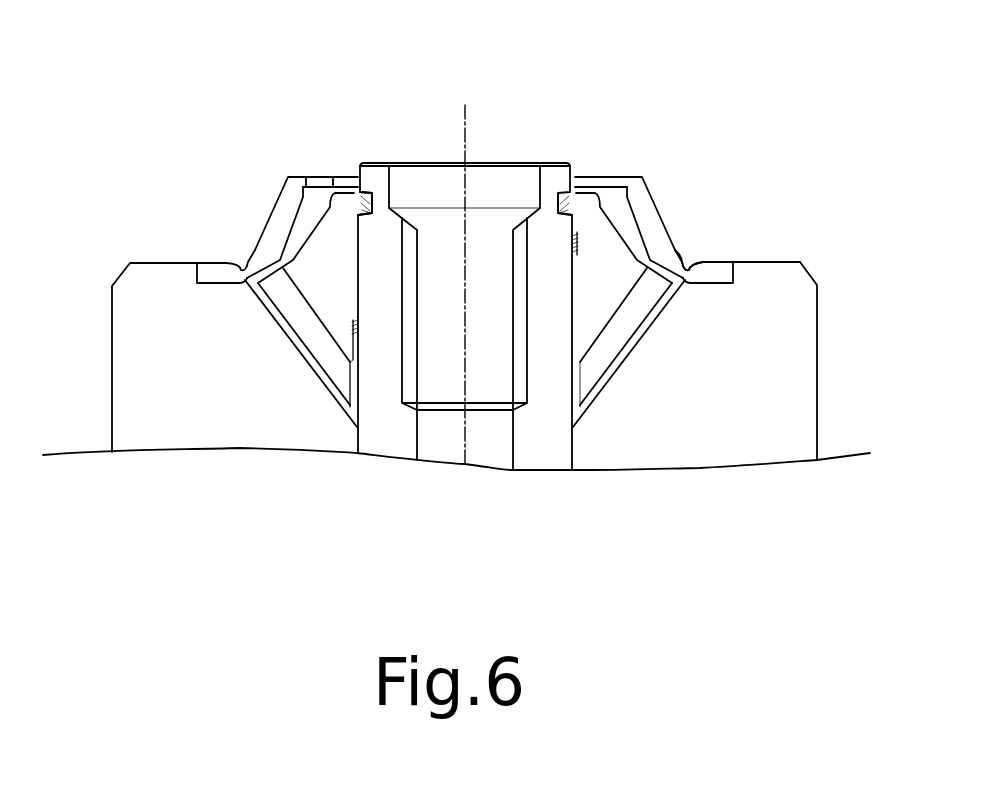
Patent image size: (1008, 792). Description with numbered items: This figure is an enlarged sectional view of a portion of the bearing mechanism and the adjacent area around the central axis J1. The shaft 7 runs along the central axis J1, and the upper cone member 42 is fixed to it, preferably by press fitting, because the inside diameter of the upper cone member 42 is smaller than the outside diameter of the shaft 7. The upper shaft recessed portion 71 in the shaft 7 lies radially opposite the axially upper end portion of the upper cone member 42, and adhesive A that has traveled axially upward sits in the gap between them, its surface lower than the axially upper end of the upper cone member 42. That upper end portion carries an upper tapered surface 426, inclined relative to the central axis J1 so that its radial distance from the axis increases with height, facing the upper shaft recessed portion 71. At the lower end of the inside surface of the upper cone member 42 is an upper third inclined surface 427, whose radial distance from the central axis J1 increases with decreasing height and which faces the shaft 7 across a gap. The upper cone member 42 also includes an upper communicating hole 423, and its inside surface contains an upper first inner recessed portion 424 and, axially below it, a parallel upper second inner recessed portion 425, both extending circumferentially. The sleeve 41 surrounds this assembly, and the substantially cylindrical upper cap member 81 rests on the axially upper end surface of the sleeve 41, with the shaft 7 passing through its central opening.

The sleeve 41 is at (737, 368).
The upper cone member 42 is at (603, 243).
The upper communicating hole 423 is at (680, 258).
The upper first inner recessed portion 424 is at (577, 240).
The upper second inner recessed portion 425 is at (700, 318).
The upper tapered surface 426 is at (352, 187).
The upper third inclined surface 427 is at (347, 357).
The shaft 7 is at (378, 167).
The upper shaft recessed portion 71 is at (577, 187).
The upper cap member 81 is at (295, 177).
The central axis J1 is at (462, 123).
The adhesive A is at (567, 193).